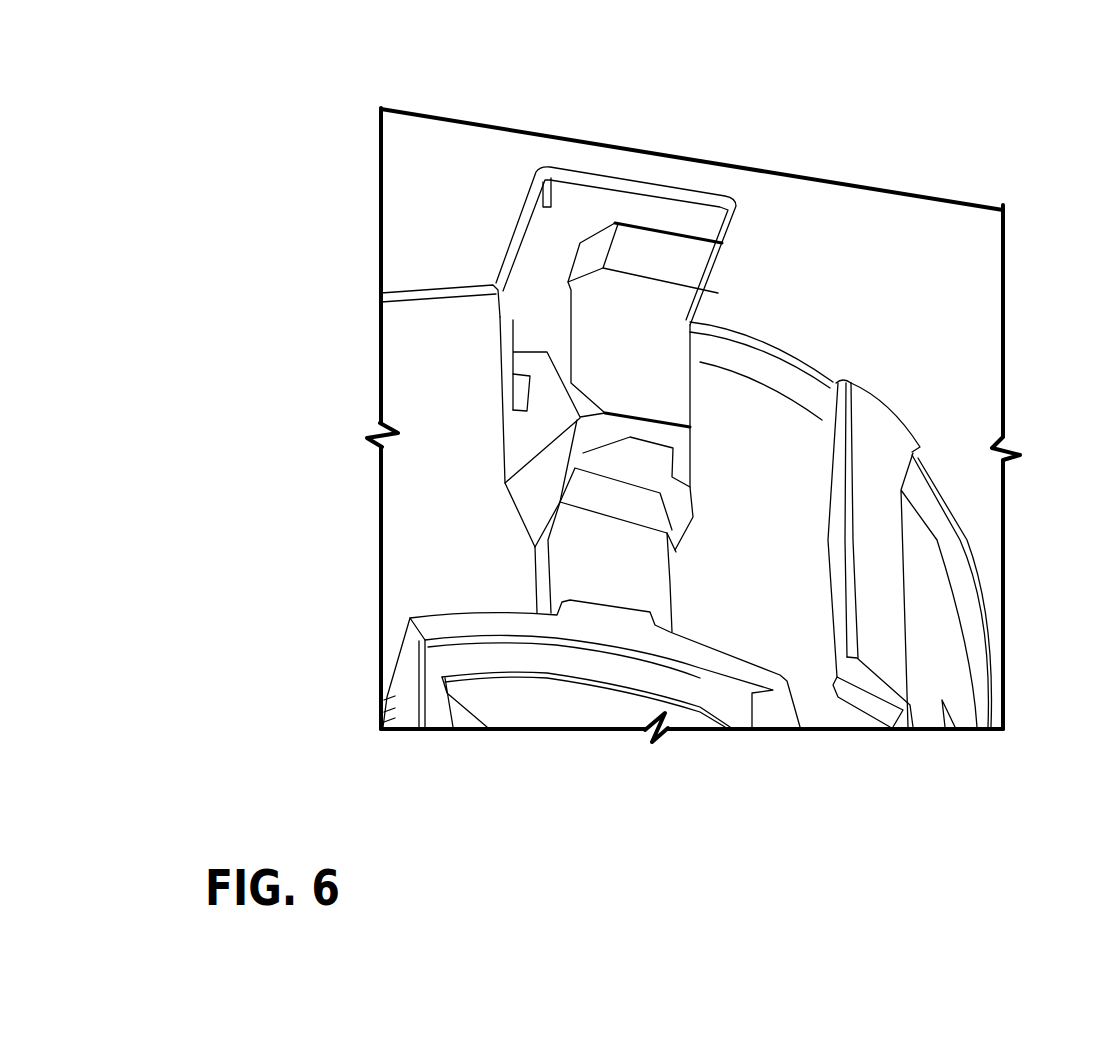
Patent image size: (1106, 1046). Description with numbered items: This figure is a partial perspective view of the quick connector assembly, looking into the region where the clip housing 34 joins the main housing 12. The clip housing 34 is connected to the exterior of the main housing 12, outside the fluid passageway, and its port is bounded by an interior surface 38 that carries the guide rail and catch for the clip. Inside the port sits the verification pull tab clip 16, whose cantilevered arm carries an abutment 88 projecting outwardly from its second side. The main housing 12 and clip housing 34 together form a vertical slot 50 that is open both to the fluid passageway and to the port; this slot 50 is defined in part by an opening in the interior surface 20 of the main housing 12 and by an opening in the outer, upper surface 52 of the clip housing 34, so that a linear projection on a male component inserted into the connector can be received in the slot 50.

The main housing 12 is at (1003, 498).
The verification pull tab clip 16 is at (650, 226).
The interior surface 20 is at (763, 440).
The clip housing 34 is at (860, 186).
The interior surface of the clip housing 38 is at (552, 276).
The vertical slot 50 is at (527, 235).
The outer surface of the clip housing 52 is at (467, 125).
The abutment 88 is at (612, 527).